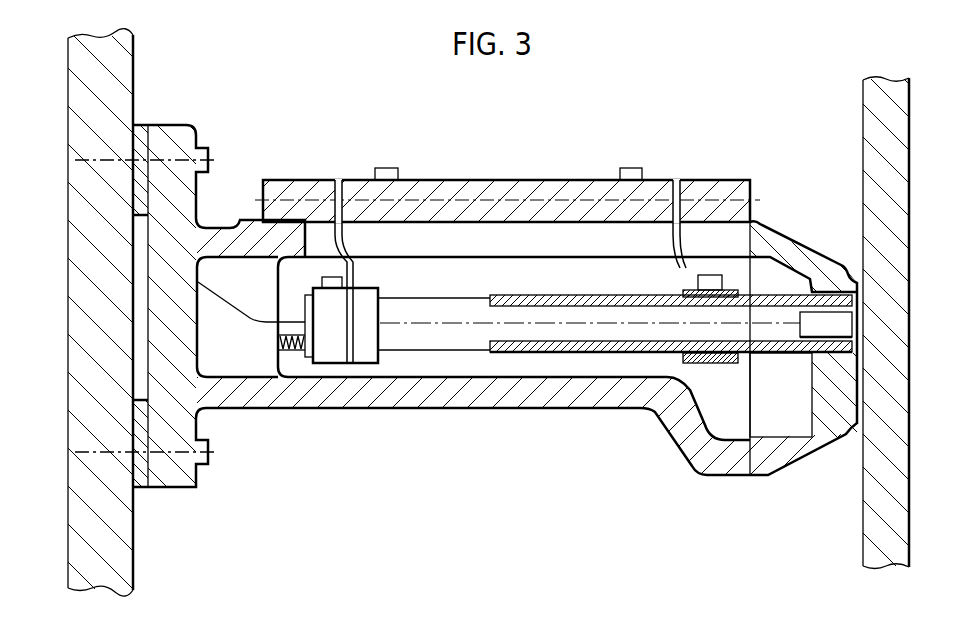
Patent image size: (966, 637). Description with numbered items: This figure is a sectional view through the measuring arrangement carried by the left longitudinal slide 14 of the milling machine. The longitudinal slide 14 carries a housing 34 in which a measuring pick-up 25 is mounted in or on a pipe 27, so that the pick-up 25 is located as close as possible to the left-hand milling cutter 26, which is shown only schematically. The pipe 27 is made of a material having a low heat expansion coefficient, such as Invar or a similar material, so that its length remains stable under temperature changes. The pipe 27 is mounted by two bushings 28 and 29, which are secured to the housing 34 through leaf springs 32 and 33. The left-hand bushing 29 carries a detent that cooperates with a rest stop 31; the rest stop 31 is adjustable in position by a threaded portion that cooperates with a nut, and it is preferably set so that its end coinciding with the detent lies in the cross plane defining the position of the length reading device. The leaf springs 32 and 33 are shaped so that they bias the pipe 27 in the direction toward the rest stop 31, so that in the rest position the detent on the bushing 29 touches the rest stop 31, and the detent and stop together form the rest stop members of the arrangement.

The longitudinal slide 14 is at (80, 130).
The milling cutter 26 is at (895, 122).
The pipe 27 is at (572, 346).
The housing 34 is at (527, 200).
The leaf spring 33 is at (350, 245).
The leaf spring 32 is at (673, 233).
The bushing 29 is at (320, 312).
The rest stop 31 is at (293, 352).
The measuring pick-up 25 is at (837, 327).
The bushing 28 is at (737, 290).